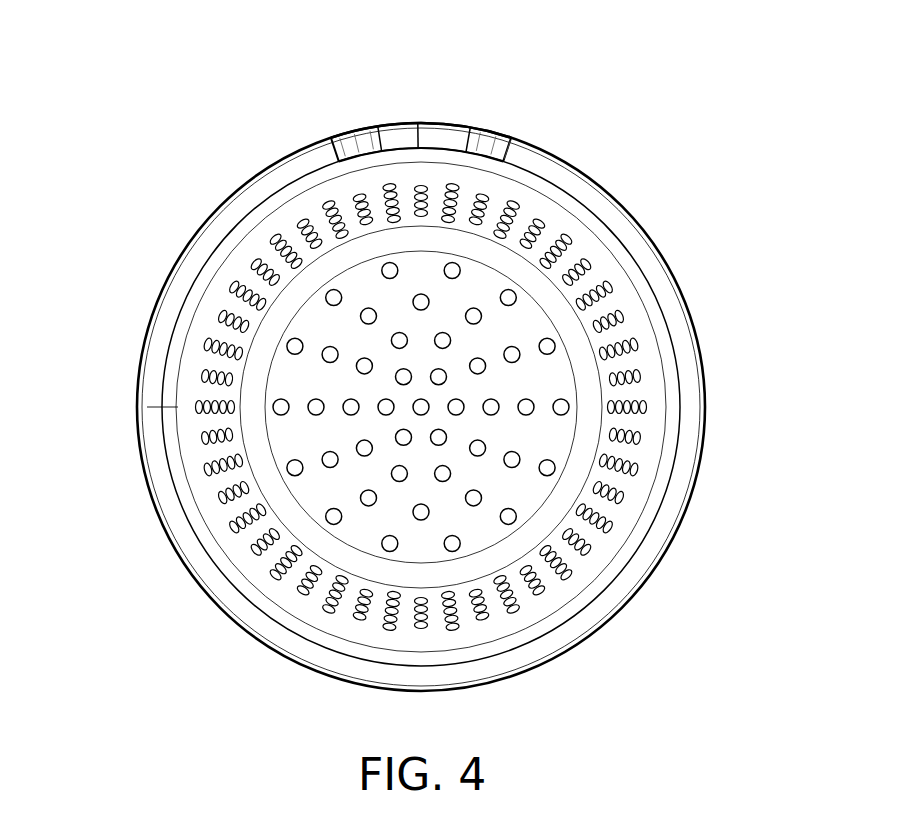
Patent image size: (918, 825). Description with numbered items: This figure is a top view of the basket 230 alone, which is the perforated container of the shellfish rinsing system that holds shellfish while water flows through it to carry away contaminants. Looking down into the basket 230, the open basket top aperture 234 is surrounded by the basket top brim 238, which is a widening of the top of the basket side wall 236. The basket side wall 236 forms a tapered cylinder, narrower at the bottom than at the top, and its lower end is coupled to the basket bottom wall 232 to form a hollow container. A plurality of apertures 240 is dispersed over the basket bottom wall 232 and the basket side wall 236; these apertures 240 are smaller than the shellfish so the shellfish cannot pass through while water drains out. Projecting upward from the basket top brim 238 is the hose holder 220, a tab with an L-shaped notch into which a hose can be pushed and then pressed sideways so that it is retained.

The hose holder 220 is at (445, 130).
The basket 230 is at (112, 133).
The basket bottom wall 232 is at (518, 323).
The basket top aperture 234 is at (638, 543).
The basket side wall 236 is at (587, 243).
The basket top brim 238 is at (678, 480).
The plurality of apertures 240 is at (365, 364).